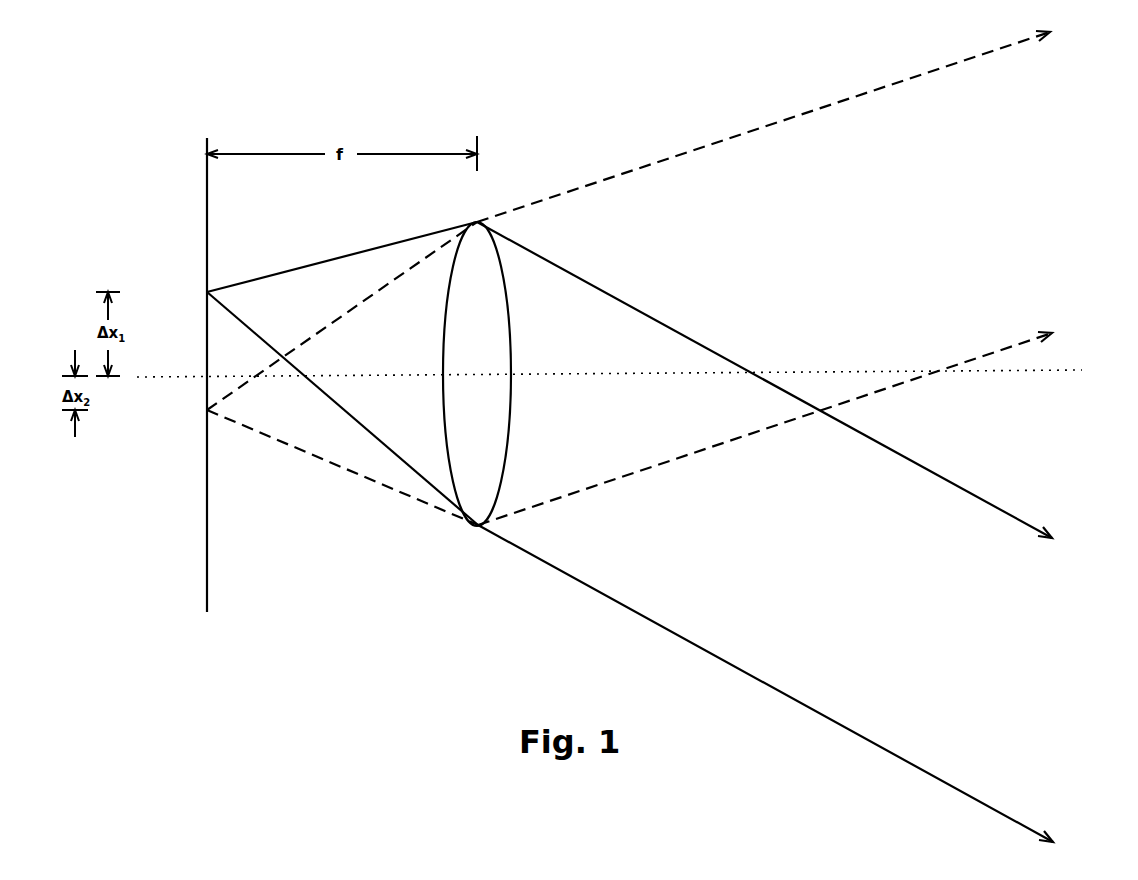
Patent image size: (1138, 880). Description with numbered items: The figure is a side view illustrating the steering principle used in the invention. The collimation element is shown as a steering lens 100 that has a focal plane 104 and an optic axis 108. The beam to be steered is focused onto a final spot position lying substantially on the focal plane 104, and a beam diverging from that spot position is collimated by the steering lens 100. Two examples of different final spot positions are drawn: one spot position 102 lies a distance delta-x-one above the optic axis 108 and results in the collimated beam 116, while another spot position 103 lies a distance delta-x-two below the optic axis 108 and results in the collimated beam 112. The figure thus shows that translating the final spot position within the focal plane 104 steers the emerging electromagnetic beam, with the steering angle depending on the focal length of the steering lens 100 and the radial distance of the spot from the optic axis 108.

The steering lens 100 is at (505, 462).
The spot position 102 is at (205, 292).
The spot position 103 is at (205, 410).
The focal plane 104 is at (207, 598).
The optic axis 108 is at (1058, 372).
The collimated beam 112 is at (891, 388).
The collimated beam 116 is at (965, 490).